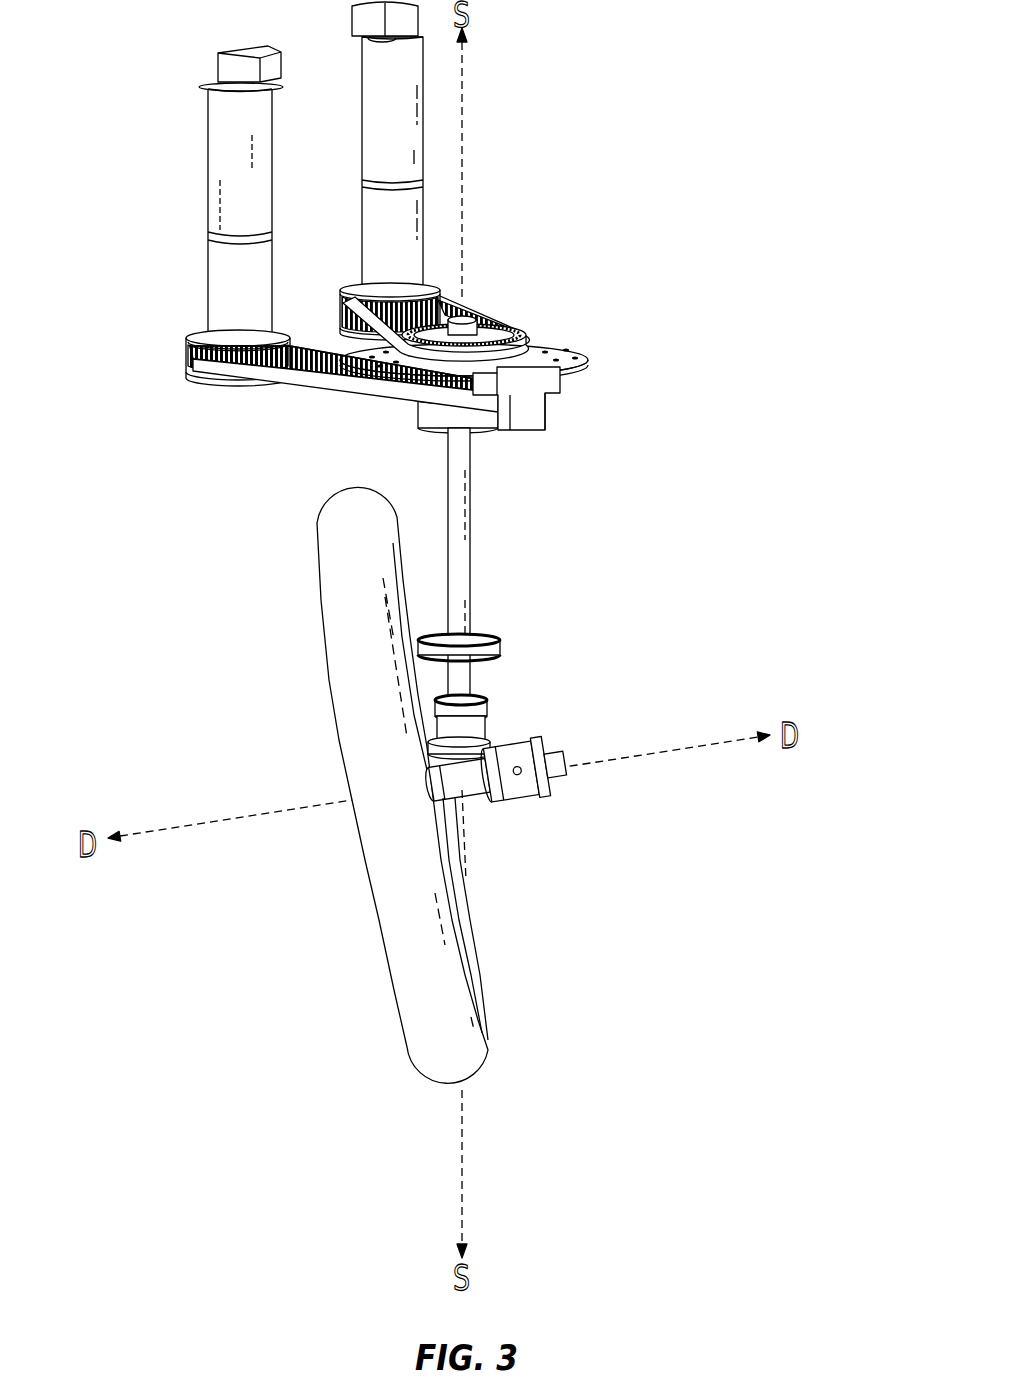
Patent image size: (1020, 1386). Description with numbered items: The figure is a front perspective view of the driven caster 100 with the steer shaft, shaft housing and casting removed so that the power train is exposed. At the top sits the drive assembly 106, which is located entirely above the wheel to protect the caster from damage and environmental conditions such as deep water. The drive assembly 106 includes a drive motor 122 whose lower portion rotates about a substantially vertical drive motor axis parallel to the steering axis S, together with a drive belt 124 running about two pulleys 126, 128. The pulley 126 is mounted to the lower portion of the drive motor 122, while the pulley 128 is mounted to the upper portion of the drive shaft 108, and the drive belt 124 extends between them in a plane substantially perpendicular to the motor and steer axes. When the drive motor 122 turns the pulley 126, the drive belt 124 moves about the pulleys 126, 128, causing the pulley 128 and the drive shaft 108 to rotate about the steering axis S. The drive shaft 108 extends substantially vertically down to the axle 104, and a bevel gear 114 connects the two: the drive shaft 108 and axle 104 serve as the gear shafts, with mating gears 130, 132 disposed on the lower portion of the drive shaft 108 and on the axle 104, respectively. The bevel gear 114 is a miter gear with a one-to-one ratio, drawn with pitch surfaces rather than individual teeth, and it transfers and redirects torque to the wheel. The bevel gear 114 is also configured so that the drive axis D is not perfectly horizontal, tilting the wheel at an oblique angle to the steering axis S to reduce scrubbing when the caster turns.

The driven caster 100 is at (702, 143).
The axle 104 is at (560, 770).
The drive assembly 106 is at (553, 235).
The drive shaft 108 is at (470, 515).
The bevel gear 114 is at (500, 737).
The drive motor 122 is at (413, 235).
The drive belt 124 is at (460, 302).
The pulley 126 is at (350, 292).
The pulley 128 is at (523, 333).
The mating gear 130 is at (488, 748).
The mating gear 132 is at (505, 800).